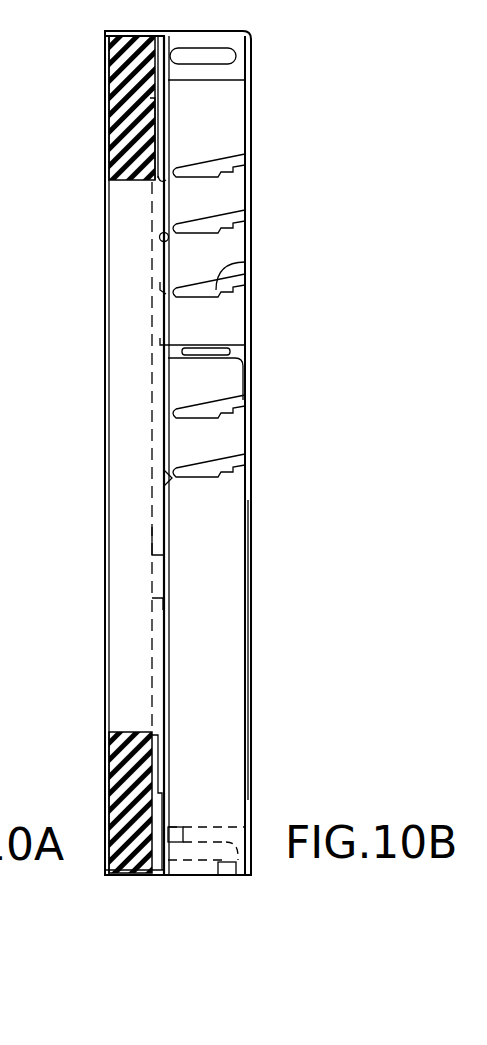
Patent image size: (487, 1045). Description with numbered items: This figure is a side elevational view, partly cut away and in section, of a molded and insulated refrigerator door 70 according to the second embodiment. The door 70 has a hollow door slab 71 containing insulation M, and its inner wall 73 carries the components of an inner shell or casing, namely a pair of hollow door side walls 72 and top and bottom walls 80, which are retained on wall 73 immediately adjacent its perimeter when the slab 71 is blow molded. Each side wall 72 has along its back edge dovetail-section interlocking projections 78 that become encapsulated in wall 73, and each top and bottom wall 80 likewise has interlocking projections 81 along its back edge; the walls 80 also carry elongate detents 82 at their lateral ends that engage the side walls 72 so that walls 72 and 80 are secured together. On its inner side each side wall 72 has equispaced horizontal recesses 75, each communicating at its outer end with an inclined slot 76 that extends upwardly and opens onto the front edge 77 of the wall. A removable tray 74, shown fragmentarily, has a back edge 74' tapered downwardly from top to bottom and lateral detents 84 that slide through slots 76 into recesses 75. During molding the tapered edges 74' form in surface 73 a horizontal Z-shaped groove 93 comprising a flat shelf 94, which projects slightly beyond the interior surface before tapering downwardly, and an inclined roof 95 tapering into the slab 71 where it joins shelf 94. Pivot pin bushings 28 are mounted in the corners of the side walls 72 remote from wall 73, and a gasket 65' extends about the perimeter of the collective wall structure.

The refrigerator door 70 is at (98, 657).
The door slab 71 is at (130, 423).
The insulation M is at (118, 138).
The interlocking projections 81 is at (135, 58).
The inner wall 73 is at (168, 125).
The top and bottom walls 80 is at (240, 62).
The detents 82 is at (205, 70).
The door side walls 72 is at (233, 137).
The recesses 75 is at (222, 182).
The inclined slot 76 is at (245, 263).
The detents 84 is at (236, 338).
The trays 74 is at (247, 372).
The inner edge of tray 74' is at (106, 361).
The inclined roof 95 is at (160, 233).
The shelf 94 is at (158, 287).
The interlocking projections 78 is at (160, 296).
The groove 93 is at (243, 510).
The gasket 65' is at (288, 650).
The front edge 77 is at (250, 690).
The bushings 28 is at (236, 862).